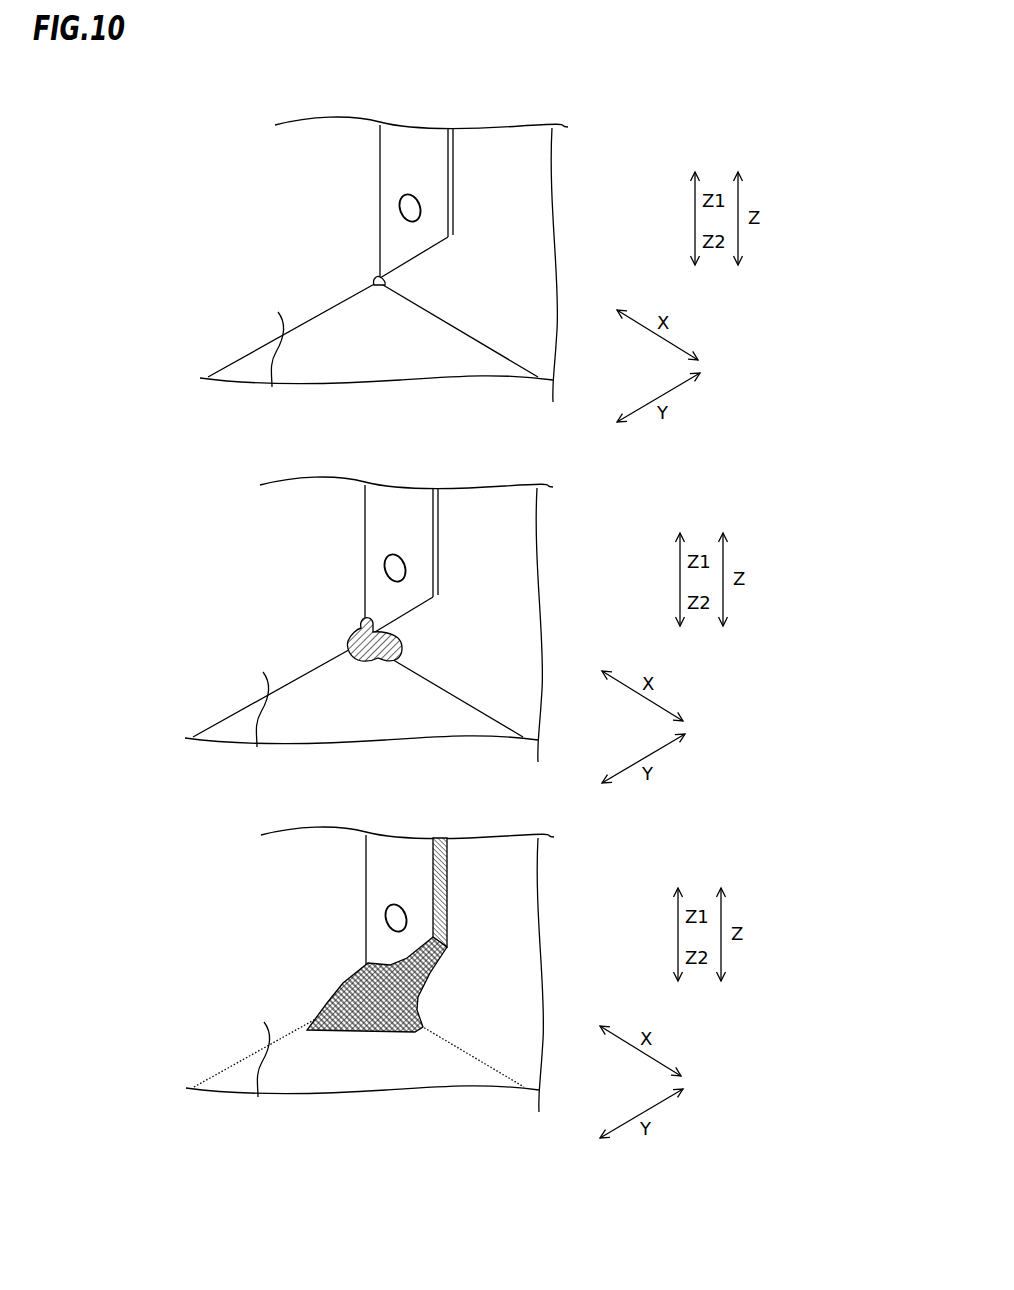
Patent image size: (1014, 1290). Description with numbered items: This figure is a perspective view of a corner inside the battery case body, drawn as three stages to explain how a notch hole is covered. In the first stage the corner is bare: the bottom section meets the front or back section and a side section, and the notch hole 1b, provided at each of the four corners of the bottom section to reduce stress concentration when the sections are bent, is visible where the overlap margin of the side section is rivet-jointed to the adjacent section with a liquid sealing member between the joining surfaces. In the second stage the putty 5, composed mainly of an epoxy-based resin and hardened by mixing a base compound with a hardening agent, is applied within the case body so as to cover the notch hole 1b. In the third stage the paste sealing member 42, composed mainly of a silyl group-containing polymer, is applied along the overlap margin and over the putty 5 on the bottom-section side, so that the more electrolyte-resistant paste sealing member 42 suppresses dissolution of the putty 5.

The notch hole 1b is at (375, 283).
The putty 5 is at (358, 633).
The paste sealing member 42 is at (337, 988).